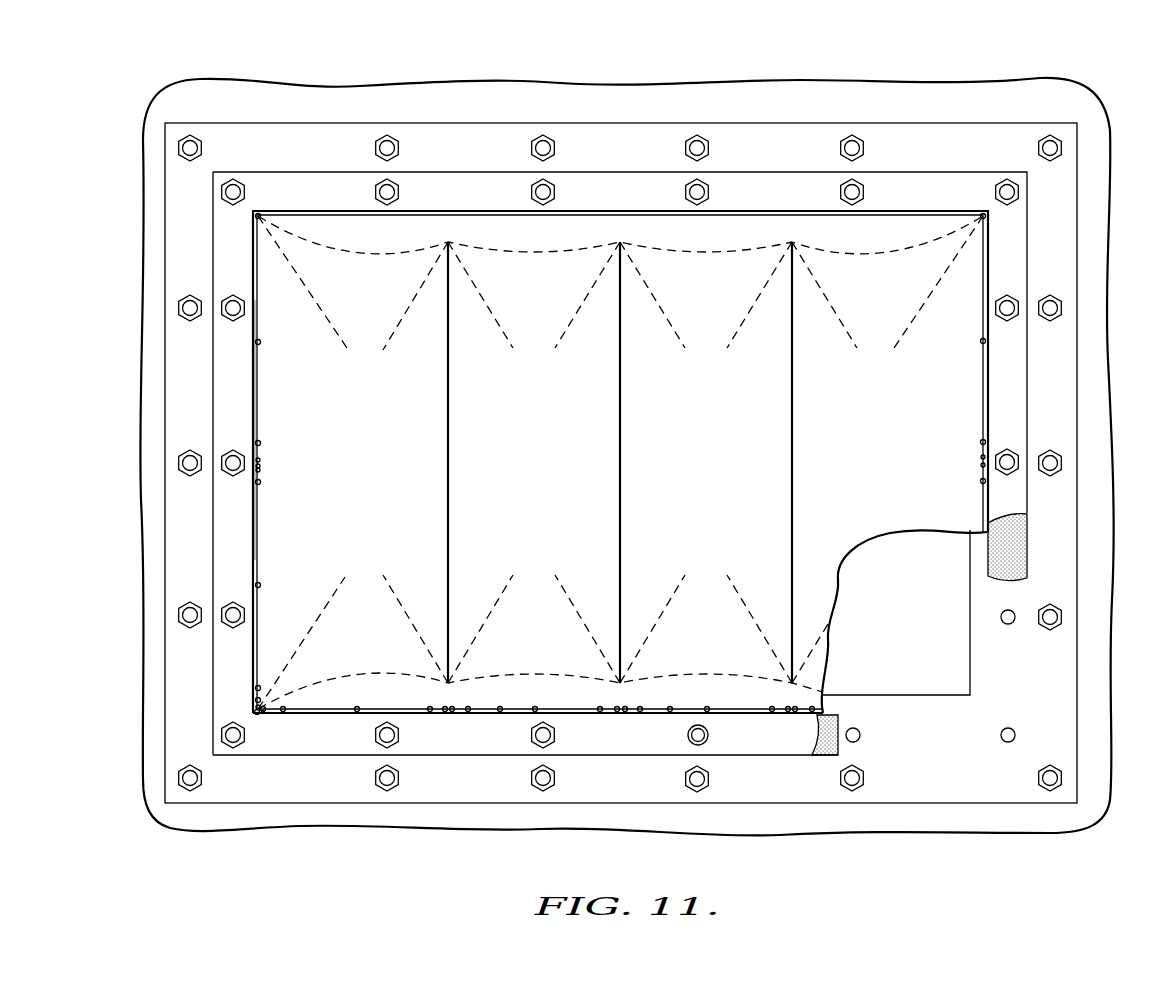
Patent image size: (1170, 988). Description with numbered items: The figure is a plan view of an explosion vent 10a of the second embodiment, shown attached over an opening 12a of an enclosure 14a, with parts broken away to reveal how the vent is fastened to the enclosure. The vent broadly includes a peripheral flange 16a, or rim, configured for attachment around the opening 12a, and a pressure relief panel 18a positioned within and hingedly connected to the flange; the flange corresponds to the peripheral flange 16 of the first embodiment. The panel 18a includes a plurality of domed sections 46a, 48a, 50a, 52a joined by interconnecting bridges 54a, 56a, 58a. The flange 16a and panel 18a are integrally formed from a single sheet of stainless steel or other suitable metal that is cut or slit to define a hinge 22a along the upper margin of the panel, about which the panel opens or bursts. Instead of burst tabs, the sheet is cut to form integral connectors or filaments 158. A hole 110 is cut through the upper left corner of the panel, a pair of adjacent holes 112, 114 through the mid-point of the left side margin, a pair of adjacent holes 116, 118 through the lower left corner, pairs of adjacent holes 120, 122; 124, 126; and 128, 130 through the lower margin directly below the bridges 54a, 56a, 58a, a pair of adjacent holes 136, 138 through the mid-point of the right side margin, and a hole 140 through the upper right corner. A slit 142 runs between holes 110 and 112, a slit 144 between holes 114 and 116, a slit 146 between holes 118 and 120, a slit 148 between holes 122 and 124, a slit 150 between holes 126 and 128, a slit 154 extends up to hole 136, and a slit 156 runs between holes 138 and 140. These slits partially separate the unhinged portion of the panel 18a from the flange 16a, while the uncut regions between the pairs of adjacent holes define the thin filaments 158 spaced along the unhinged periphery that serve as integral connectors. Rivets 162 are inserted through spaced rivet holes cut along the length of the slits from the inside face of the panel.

The explosion vent 10a is at (1040, 518).
The opening 12a is at (970, 648).
The enclosure 14a is at (950, 822).
The peripheral flange 16 is at (1141, 741).
The peripheral flange 16a is at (828, 738).
The pressure relief panel 18a is at (725, 233).
The hinge 22a is at (575, 218).
The domed section 46a is at (353, 475).
The domed section 48a is at (534, 462).
The domed section 50a is at (706, 462).
The domed section 52a is at (852, 462).
The bridge 54a is at (449, 390).
The bridge 56a is at (621, 420).
The bridge 58a is at (793, 427).
The hole 110 is at (262, 216).
The hole 112 is at (260, 459).
The hole 114 is at (260, 470).
The hole 116 is at (255, 706).
The hole 118 is at (264, 714).
The hole 120 is at (446, 713).
The hole 122 is at (453, 712).
The hole 124 is at (616, 713).
The hole 126 is at (626, 713).
The hole 128 is at (787, 713).
The hole 130 is at (795, 713).
The hole 136 is at (981, 457).
The hole 138 is at (981, 466).
The hole 140 is at (983, 216).
The slit 142 is at (258, 290).
The slit 144 is at (253, 552).
The slit 146 is at (310, 714).
The slit 148 is at (500, 707).
The slit 150 is at (670, 707).
The slit 154 is at (945, 528).
The slit 156 is at (983, 308).
The filament 158 is at (261, 465).
The rivet 162 is at (258, 443).